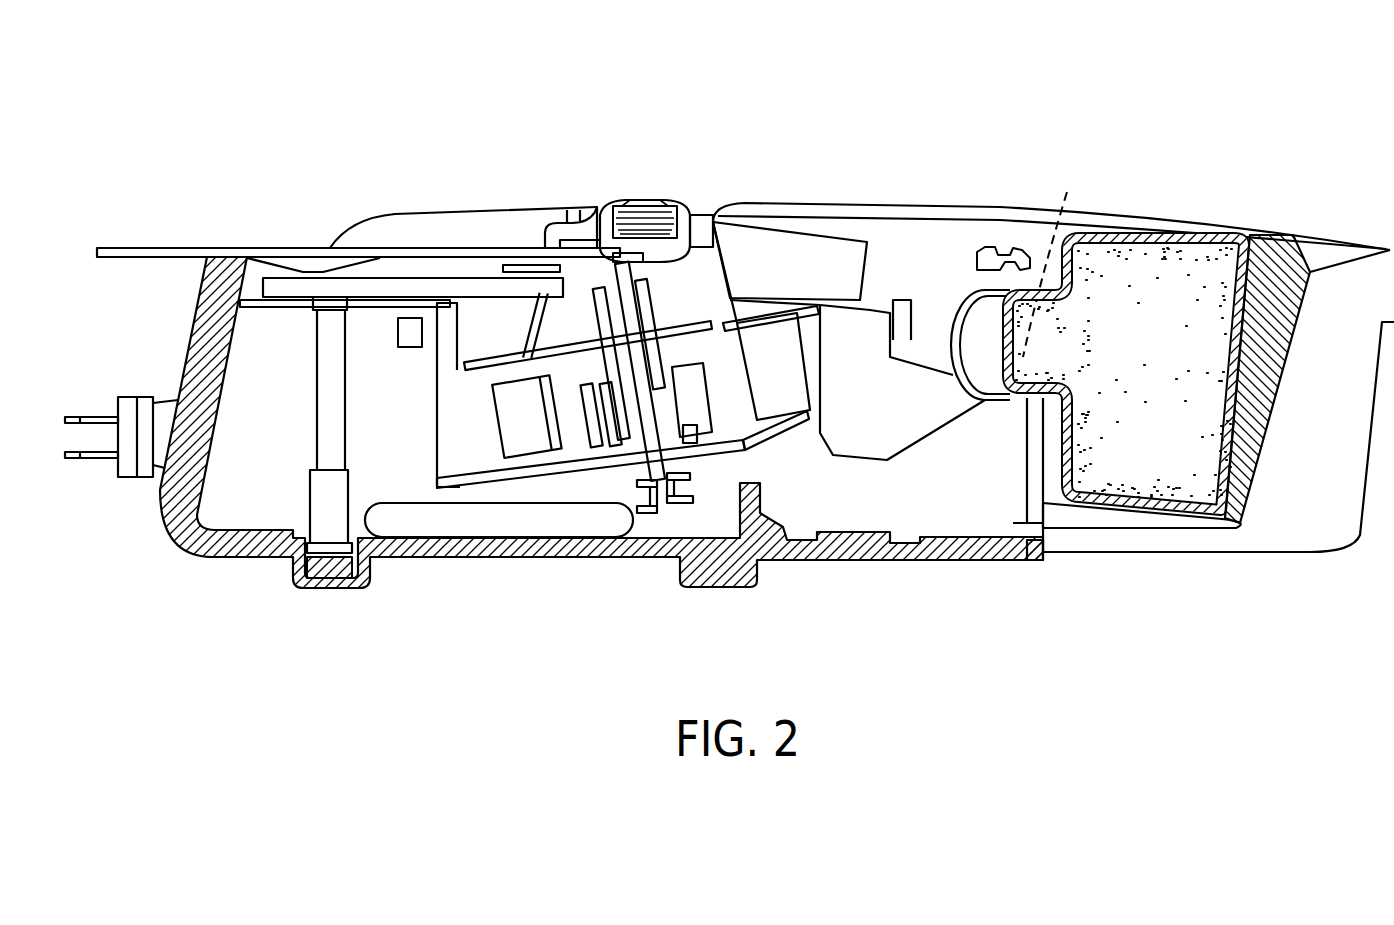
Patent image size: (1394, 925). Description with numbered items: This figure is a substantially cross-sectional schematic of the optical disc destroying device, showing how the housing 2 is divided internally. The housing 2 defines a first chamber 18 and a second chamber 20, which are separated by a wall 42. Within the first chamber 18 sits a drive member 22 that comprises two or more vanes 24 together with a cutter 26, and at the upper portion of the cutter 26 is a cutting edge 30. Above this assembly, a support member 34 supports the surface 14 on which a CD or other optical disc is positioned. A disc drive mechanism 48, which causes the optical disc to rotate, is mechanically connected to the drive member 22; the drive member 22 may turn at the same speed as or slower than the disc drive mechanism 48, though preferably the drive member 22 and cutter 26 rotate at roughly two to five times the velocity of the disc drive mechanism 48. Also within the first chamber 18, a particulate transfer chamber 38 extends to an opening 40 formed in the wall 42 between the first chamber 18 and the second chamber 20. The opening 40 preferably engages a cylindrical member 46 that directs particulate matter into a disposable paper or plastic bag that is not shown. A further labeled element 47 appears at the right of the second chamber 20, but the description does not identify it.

The housing 2 is at (1333, 533).
The surface 14 is at (468, 288).
The first chamber 18 is at (238, 505).
The second chamber 20 is at (1140, 475).
The drive member 22 is at (666, 508).
The vanes 24 is at (790, 395).
The cutter 26 is at (648, 318).
The cutting edge 30 is at (590, 210).
The support member 34 is at (335, 512).
The particulate transfer chamber 38 is at (453, 467).
The opening 40 is at (1000, 272).
The wall 42 is at (1060, 257).
The cylindrical member 46 is at (1003, 372).
The compartment wall 47 is at (1246, 256).
The disc drive mechanism 48 is at (641, 213).